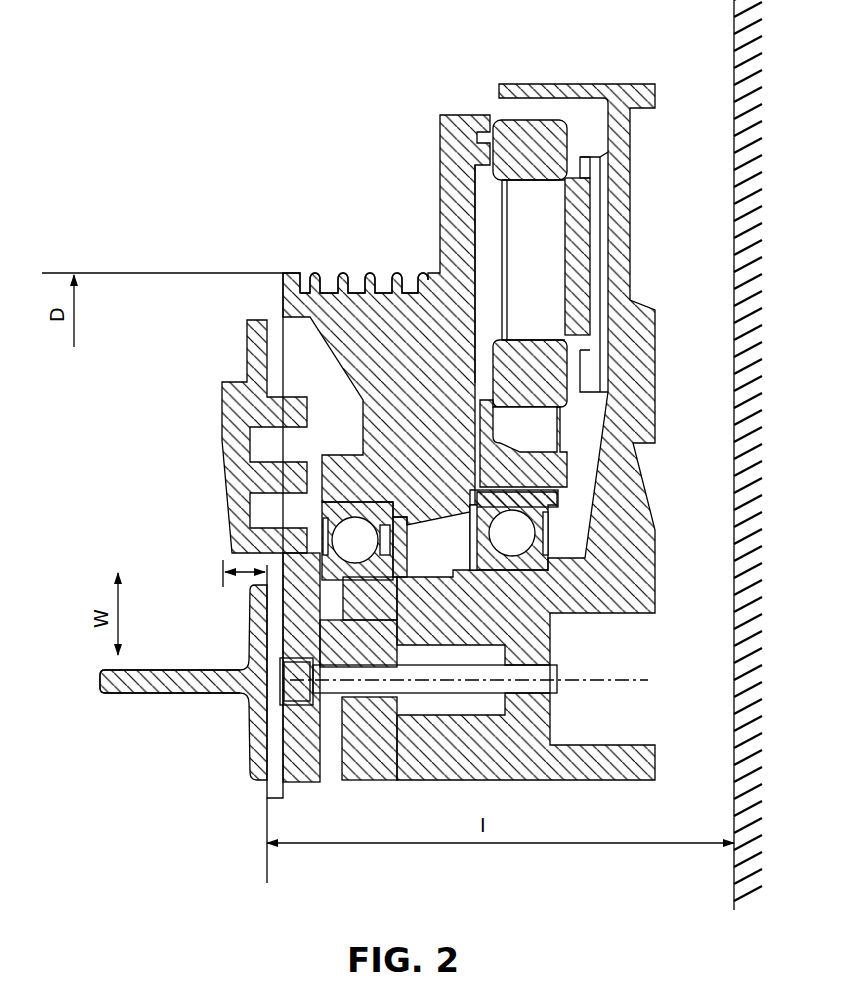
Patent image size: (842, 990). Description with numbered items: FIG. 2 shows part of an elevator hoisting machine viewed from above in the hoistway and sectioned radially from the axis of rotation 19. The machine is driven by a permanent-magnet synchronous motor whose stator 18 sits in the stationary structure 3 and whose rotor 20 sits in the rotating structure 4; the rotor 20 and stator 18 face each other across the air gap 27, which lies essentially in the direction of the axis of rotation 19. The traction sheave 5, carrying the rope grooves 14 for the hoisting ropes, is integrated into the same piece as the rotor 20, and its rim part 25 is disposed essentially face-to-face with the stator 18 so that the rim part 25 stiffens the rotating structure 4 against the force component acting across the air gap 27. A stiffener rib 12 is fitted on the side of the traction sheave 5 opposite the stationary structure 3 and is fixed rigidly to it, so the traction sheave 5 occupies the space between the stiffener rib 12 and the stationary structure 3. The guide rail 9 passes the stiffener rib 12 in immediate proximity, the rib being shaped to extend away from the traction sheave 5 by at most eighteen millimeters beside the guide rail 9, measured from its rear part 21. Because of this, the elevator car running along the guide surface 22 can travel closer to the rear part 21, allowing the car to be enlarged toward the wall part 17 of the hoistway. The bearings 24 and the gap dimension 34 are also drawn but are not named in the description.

The stationary structure 3 is at (563, 60).
The rotating structure 4 is at (270, 154).
The traction sheave 5 is at (330, 350).
The guide rail 9 is at (80, 668).
The stiffener rib 12 is at (222, 423).
The rope grooves 14 is at (303, 290).
The wall part 17 is at (734, 62).
The stator 18 is at (528, 250).
The axis of rotation 19 is at (567, 680).
The rotor 20 is at (470, 222).
The rear part 21 is at (280, 795).
The guide surface 22 is at (127, 694).
The bearing 24 is at (382, 540).
The rim part 25 is at (283, 297).
The air gap 27 is at (492, 427).
The gap 34 is at (245, 578).